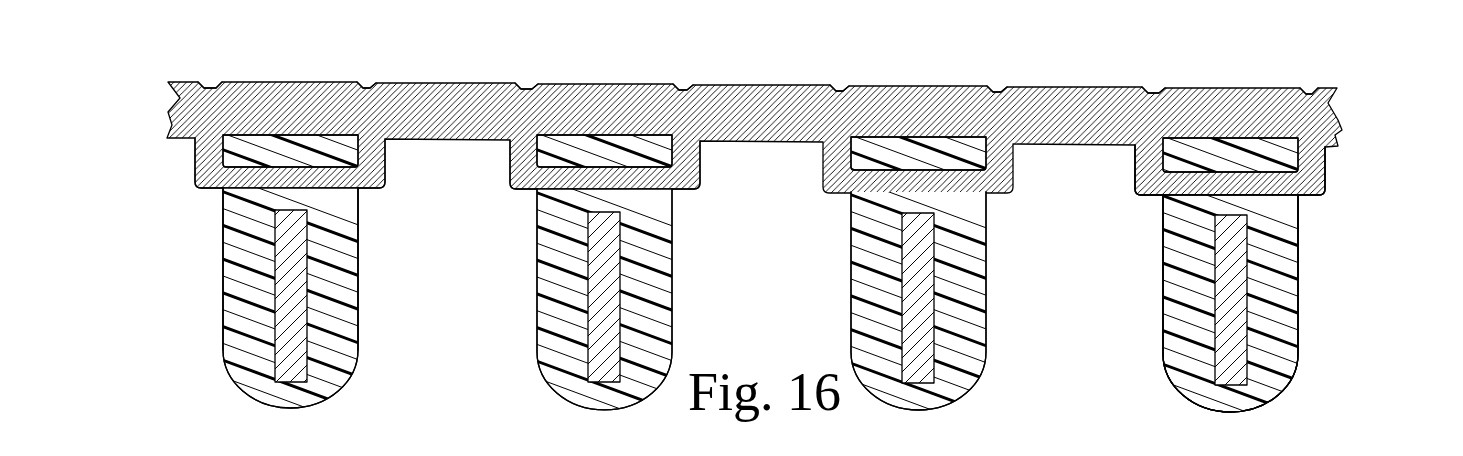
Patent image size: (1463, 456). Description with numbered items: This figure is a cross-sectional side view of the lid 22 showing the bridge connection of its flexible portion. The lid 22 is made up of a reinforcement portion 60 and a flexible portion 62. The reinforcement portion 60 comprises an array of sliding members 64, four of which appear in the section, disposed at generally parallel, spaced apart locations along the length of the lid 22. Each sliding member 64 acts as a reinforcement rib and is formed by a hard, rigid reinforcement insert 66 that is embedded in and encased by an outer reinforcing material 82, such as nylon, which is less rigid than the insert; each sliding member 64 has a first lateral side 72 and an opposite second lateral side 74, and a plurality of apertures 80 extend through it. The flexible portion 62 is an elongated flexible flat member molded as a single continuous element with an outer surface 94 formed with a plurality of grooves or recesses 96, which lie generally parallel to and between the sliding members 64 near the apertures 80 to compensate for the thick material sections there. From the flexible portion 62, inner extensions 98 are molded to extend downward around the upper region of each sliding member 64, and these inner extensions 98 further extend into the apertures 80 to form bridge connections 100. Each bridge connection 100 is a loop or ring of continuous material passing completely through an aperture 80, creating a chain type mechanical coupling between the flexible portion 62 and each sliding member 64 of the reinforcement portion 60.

The lid 22 is at (1380, 210).
The reinforcement portion 60 is at (1338, 288).
The flexible portion 62 is at (1340, 177).
The sliding member 64 is at (300, 442).
The reinforcement insert 66 is at (297, 362).
The first lateral side 72 is at (223, 312).
The second lateral side 74 is at (358, 295).
The aperture 80 is at (208, 176).
The outer reinforcing material 82 is at (335, 343).
The outer surface 94 is at (770, 83).
The recess 96 is at (213, 83).
The inner extension 98 is at (387, 167).
The bridge connection 100 is at (278, 197).